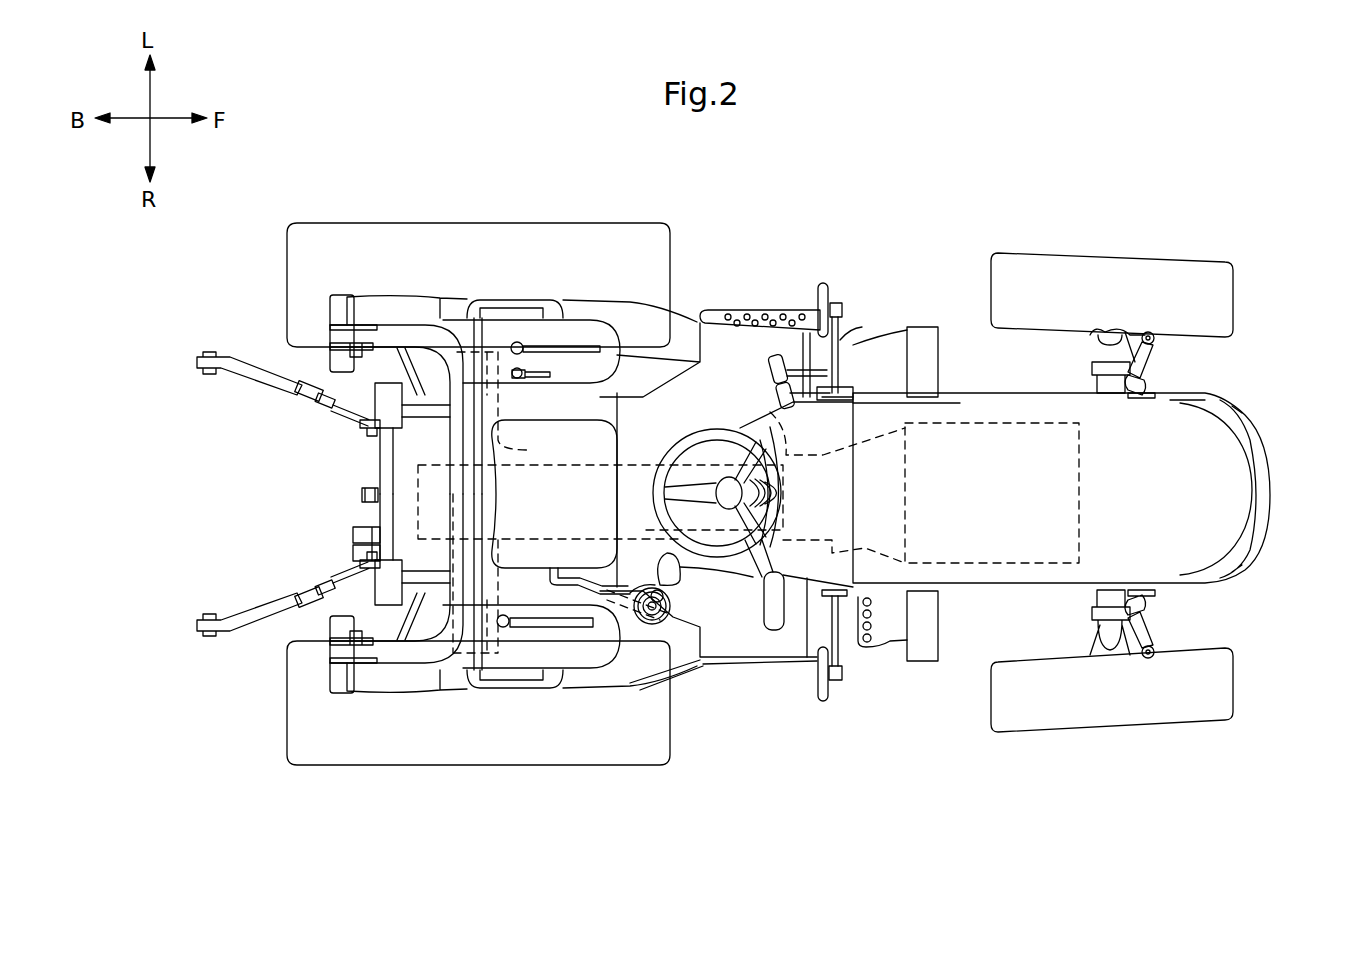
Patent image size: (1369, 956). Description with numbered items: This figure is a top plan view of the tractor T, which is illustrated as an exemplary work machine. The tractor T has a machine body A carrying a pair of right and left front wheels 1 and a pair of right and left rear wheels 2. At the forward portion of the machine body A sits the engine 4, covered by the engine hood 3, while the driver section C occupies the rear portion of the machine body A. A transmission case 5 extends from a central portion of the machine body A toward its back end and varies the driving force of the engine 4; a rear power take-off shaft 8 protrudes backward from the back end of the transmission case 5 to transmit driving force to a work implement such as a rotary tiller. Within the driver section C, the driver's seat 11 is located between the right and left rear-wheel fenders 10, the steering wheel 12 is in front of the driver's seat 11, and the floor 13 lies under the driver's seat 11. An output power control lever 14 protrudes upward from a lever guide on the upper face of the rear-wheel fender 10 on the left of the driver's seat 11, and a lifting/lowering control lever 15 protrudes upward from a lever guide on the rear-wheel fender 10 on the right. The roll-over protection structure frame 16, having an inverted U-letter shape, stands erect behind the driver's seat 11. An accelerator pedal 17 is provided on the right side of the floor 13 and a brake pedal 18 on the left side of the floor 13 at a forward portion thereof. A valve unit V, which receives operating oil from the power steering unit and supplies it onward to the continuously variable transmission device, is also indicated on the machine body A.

The front wheels 1 is at (1120, 262).
The rear wheels 2 is at (503, 228).
The engine hood 3 is at (1225, 487).
The engine 4 is at (985, 422).
The transmission case 5 is at (770, 413).
The rear power take-off (PTO) shaft 8 is at (360, 492).
The rear-wheel fenders 10 is at (410, 305).
The driver's seat 11 is at (612, 457).
The steering wheel 12 is at (692, 422).
The floor 13 is at (722, 645).
The output power control lever 14 is at (517, 342).
The lifting/lowering control lever 15 is at (503, 628).
The roll-over protection structure (ROPS) frame 16 is at (487, 497).
The accelerator pedal 17 is at (773, 628).
The brake pedal 18 is at (773, 355).
The machine body A is at (794, 308).
The driver section C is at (752, 678).
The valve unit V is at (797, 549).
The tractor T is at (1266, 129).